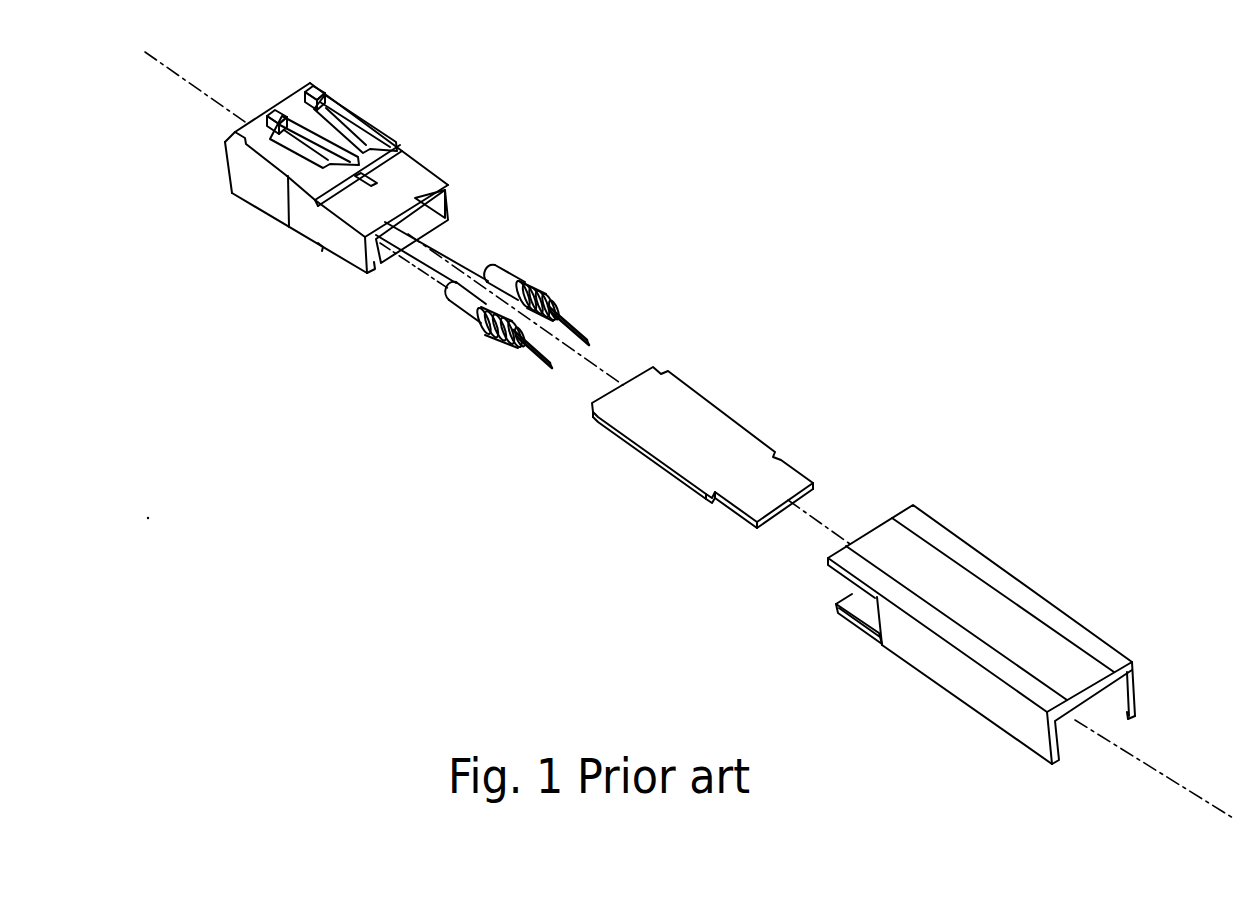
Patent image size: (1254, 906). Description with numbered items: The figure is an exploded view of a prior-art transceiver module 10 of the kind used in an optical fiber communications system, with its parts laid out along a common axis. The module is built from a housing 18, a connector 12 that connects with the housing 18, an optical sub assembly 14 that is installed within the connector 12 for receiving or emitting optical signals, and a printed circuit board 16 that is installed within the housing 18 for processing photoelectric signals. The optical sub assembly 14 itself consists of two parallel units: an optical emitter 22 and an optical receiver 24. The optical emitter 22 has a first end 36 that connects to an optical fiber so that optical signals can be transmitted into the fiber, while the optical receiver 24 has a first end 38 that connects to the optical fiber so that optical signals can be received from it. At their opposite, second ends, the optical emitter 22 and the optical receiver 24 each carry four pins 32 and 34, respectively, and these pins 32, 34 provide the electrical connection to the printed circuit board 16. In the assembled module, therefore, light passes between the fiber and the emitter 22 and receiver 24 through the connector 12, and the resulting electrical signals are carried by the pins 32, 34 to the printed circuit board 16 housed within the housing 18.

The transceiver module 10 is at (826, 161).
The connector 12 is at (377, 137).
The optical sub assembly (OSA) 14 is at (540, 389).
The printed circuit board (PCB) 16 is at (743, 445).
The housing 18 is at (1017, 618).
The optical emitter 22 is at (498, 337).
The optical receiver 24 is at (540, 284).
The pins 32 is at (546, 372).
The pins 34 is at (588, 336).
The first end 36 is at (452, 299).
The first end 38 is at (508, 268).